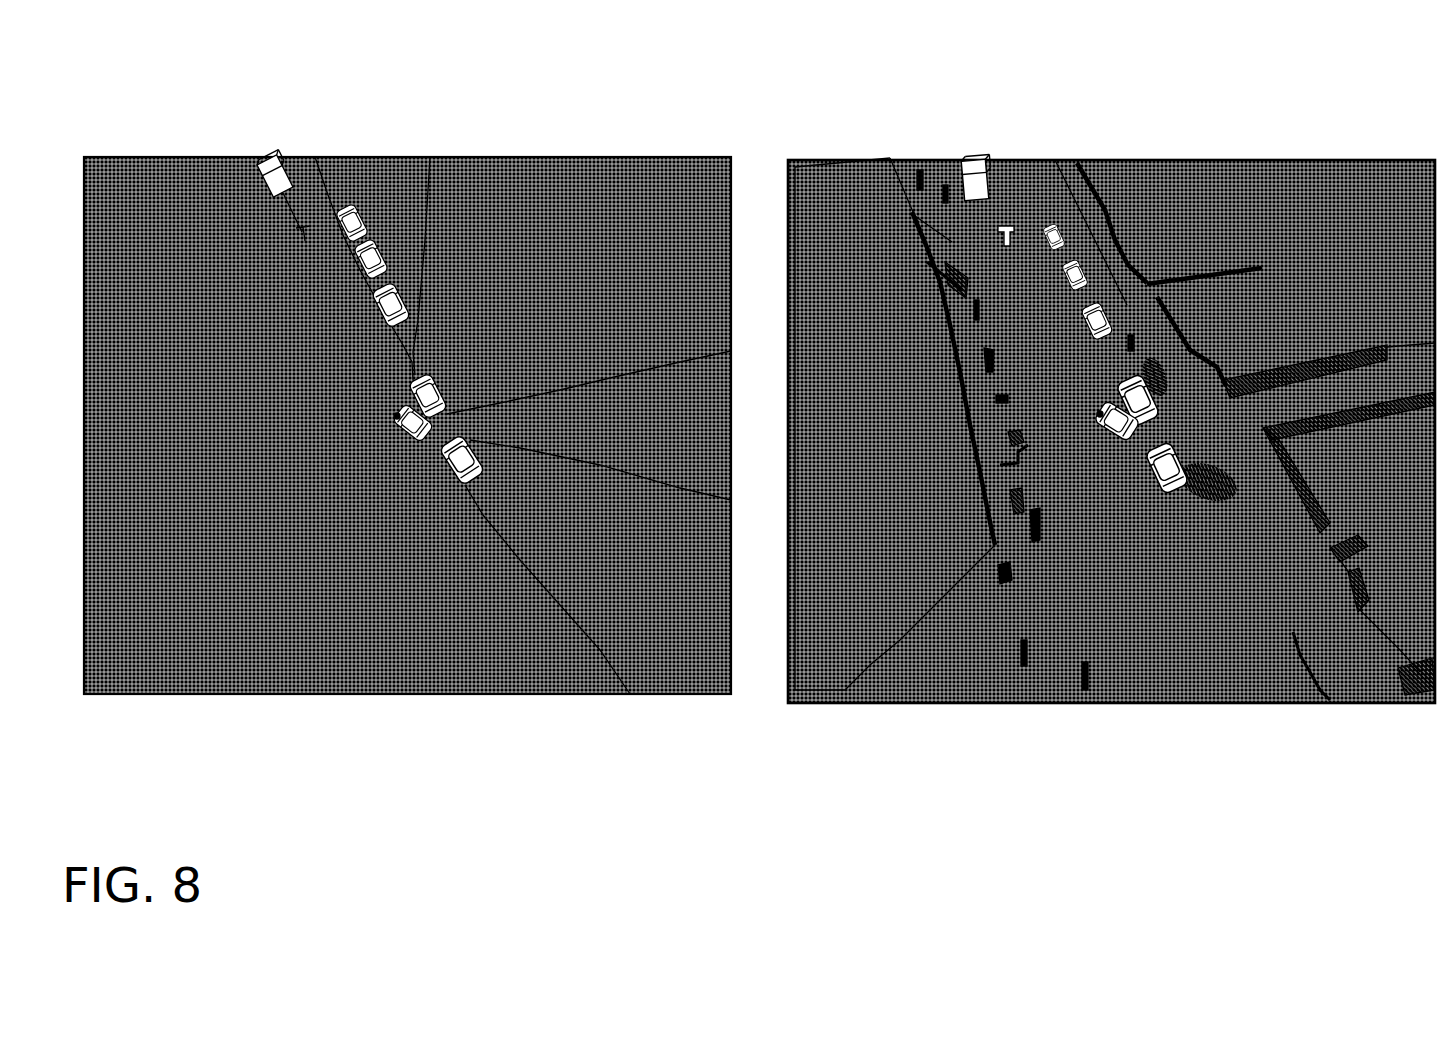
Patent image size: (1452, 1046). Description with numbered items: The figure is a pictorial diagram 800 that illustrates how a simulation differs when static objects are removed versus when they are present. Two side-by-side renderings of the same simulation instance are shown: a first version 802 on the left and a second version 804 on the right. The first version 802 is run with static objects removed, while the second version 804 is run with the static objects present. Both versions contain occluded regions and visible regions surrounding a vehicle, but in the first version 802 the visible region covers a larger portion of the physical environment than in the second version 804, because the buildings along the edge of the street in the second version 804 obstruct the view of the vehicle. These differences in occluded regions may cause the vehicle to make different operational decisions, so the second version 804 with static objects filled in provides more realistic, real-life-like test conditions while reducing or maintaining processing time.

The pictorial diagram 800 is at (150, 50).
The first version 802 is at (417, 124).
The second version 804 is at (1141, 126).